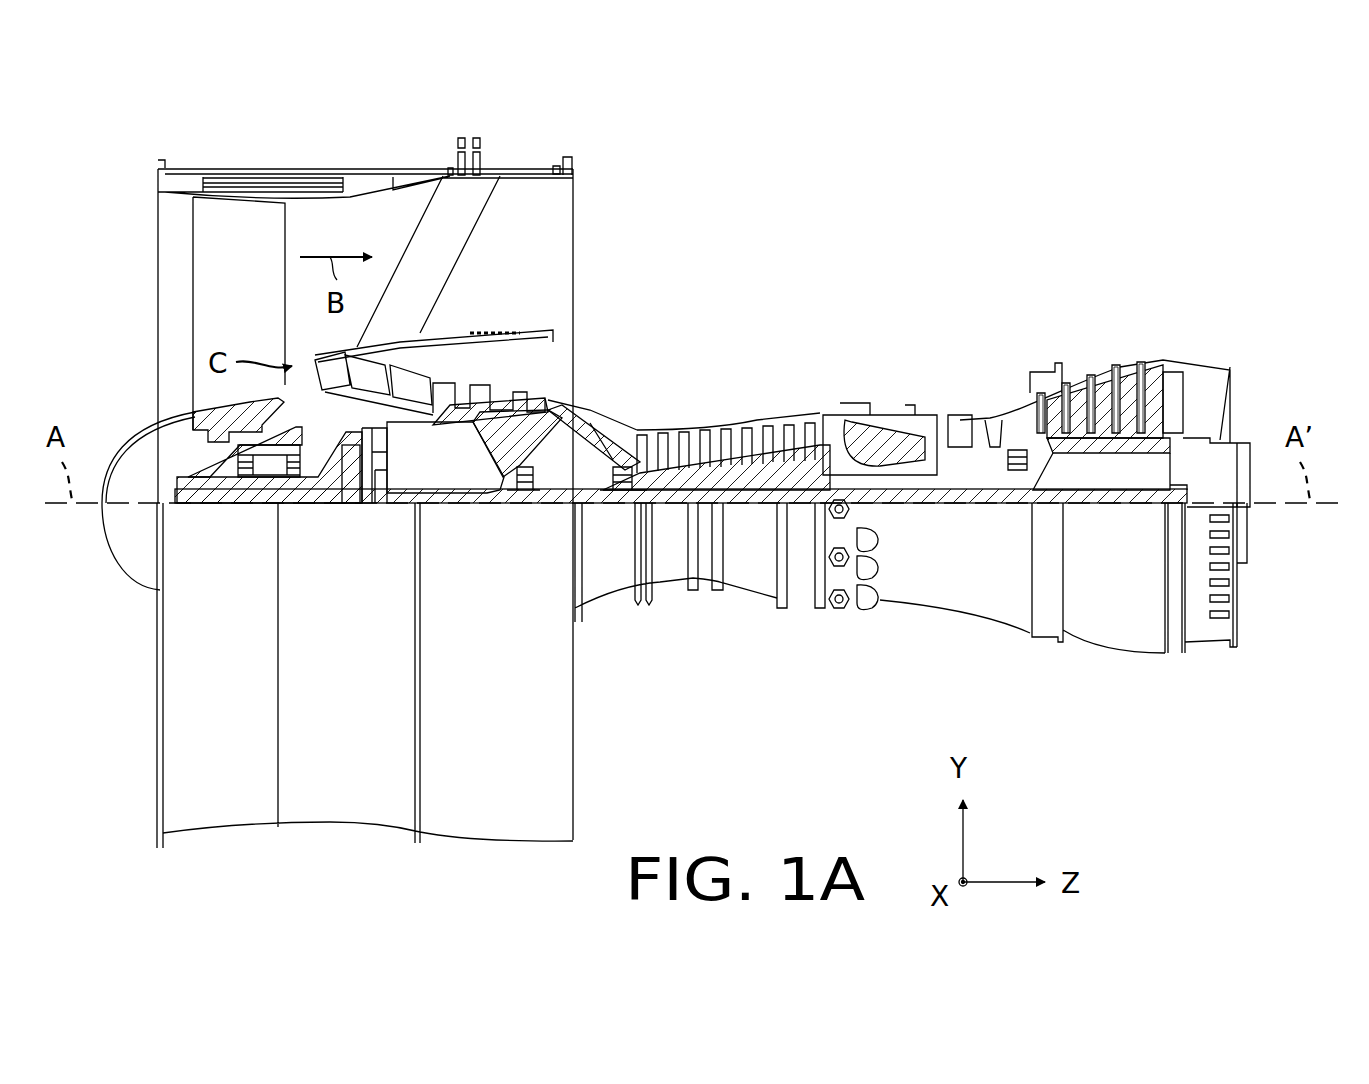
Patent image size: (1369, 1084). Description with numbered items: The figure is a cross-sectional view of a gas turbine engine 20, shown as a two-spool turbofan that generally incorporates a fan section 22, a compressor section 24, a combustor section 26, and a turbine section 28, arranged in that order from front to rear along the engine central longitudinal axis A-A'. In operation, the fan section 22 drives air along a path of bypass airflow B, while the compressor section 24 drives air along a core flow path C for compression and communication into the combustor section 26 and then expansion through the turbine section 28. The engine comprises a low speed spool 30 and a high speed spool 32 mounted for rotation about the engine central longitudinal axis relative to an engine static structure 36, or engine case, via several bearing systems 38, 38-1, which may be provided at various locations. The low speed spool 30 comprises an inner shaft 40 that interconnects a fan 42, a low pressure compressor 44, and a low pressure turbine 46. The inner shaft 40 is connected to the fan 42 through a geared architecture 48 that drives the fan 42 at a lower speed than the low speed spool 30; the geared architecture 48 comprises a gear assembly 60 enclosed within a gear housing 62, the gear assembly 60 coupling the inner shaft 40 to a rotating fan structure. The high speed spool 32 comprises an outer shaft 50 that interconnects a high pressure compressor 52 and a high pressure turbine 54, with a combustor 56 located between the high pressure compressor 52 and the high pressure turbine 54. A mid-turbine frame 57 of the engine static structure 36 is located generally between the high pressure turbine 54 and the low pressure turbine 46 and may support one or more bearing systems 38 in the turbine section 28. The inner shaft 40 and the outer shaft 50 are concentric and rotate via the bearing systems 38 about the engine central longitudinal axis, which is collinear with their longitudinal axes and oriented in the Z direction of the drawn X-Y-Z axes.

The gas turbine engine 20 is at (940, 195).
The fan section 22 is at (413, 147).
The compressor section 24 is at (423, 290).
The combustor section 26 is at (938, 290).
The turbine section 28 is at (1173, 290).
The low speed spool 30 is at (752, 520).
The high speed spool 32 is at (797, 467).
The engine static structure 36 is at (140, 838).
The bearing system 38 is at (1008, 478).
The bearing system 38-1 is at (255, 480).
The inner shaft 40 is at (597, 505).
The fan 42 is at (263, 308).
The low pressure compressor 44 is at (505, 388).
The low pressure turbine 46 is at (1100, 380).
The geared architecture 48 is at (380, 522).
The outer shaft 50 is at (878, 485).
The high pressure compressor 52 is at (733, 468).
The high pressure turbine 54 is at (958, 413).
The combustor 56 is at (880, 437).
The mid-turbine frame 57 is at (998, 445).
The gear assembly 60 is at (388, 487).
The gear housing 62 is at (385, 452).